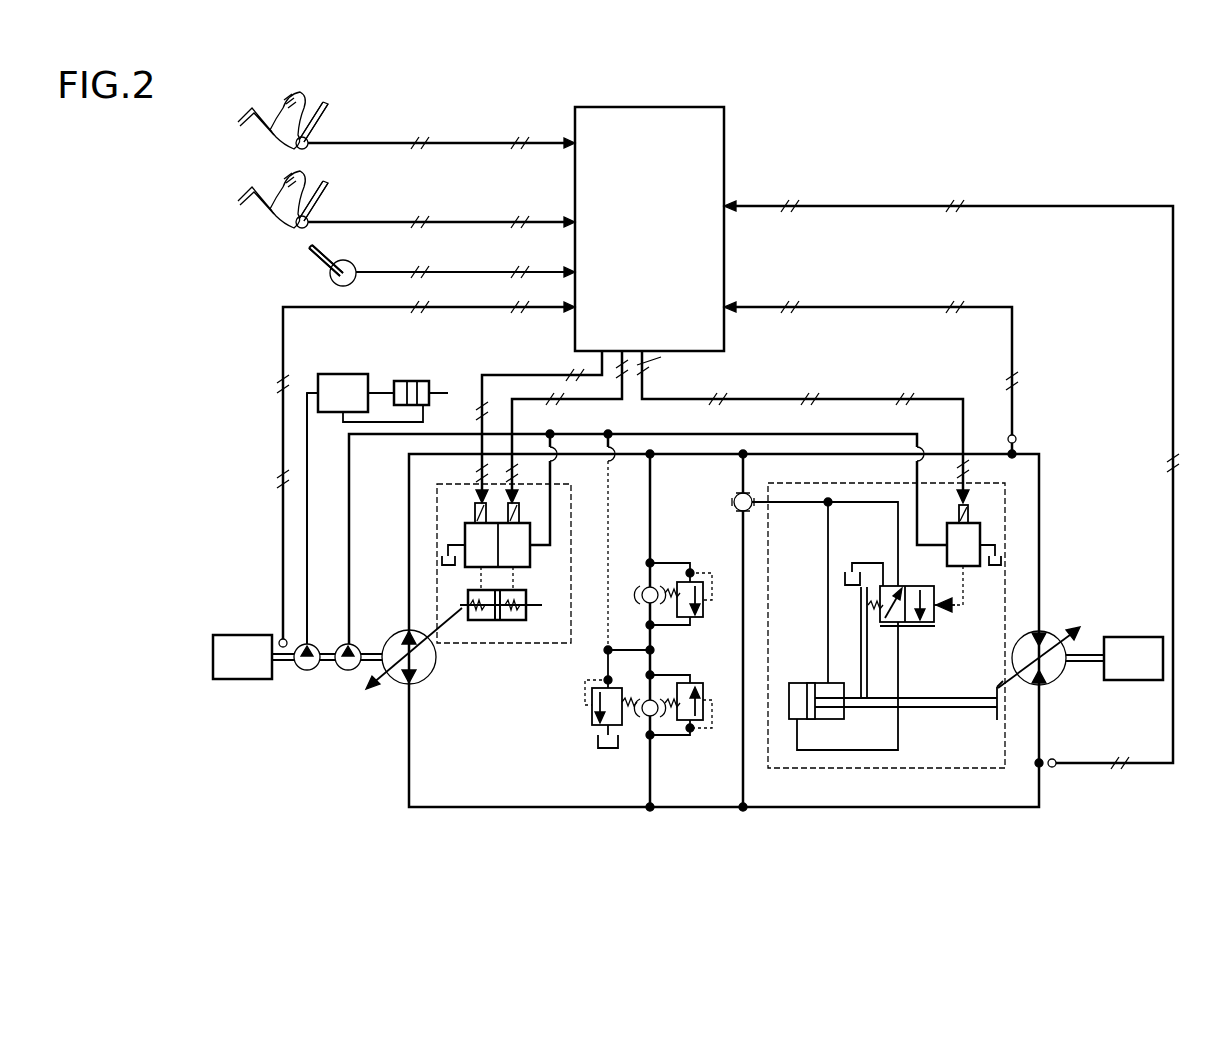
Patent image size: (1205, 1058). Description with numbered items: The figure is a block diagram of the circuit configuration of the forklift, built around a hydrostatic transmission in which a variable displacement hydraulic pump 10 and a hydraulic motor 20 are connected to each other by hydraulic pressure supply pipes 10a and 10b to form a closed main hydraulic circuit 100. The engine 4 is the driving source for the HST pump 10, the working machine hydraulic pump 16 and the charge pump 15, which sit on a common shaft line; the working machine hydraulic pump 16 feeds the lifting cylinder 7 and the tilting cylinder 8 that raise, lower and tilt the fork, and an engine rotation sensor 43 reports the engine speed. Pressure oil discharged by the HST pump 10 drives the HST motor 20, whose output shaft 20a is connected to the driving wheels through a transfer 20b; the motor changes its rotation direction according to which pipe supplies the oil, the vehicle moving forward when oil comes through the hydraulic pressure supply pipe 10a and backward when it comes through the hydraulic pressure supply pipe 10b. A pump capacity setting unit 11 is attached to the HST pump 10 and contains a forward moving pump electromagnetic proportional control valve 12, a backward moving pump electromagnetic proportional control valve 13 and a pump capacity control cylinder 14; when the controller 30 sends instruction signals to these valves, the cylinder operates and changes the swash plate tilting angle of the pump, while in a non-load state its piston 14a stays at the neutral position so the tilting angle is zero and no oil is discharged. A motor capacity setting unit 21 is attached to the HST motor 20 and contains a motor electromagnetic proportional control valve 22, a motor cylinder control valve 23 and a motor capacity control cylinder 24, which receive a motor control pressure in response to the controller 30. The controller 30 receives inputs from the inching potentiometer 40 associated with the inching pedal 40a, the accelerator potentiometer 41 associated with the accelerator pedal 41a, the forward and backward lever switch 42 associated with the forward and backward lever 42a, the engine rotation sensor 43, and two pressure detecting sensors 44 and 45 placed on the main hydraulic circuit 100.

The controller 30 is at (653, 107).
The inching potentiometer 40 is at (318, 136).
The inching pedal 40a is at (328, 104).
The accelerator potentiometer 41 is at (318, 215).
The accelerator pedal 41a is at (328, 183).
The forward and backward lever switch 42 is at (330, 276).
The forward and backward lever 42a is at (312, 247).
The engine 4 is at (232, 680).
The engine rotation sensor 43 is at (279, 640).
The working machine hydraulic pump 16 is at (305, 670).
The charge pump 15 is at (346, 670).
The hydraulic pump 10 is at (430, 683).
The lifting cylinder 7 is at (377, 498).
The tilting cylinder 8 is at (400, 382).
The pump capacity setting unit 11 is at (546, 648).
The forward moving pump electromagnetic proportional control valve 12 is at (527, 568).
The backward moving pump electromagnetic proportional control valve 13 is at (472, 568).
The pump capacity control cylinder 14 is at (516, 622).
The piston 14a is at (497, 622).
The hydraulic pressure supply pipe 10a is at (674, 456).
The hydraulic pressure supply pipe 10b is at (472, 804).
The motor capacity setting unit 21 is at (862, 770).
The motor electromagnetic proportional control valve 22 is at (962, 568).
The motor cylinder control valve 23 is at (928, 636).
The motor capacity control cylinder 24 is at (798, 664).
The hydraulic motor 20 is at (1045, 685).
The output shaft 20a is at (1090, 663).
The transfer 20b is at (1120, 637).
The pressure detecting sensor 44 is at (1016, 434).
The pressure detecting sensor 45 is at (1056, 768).
The main hydraulic circuit 100 is at (950, 820).